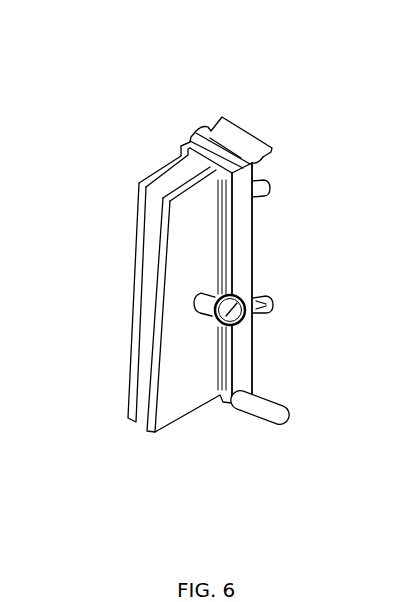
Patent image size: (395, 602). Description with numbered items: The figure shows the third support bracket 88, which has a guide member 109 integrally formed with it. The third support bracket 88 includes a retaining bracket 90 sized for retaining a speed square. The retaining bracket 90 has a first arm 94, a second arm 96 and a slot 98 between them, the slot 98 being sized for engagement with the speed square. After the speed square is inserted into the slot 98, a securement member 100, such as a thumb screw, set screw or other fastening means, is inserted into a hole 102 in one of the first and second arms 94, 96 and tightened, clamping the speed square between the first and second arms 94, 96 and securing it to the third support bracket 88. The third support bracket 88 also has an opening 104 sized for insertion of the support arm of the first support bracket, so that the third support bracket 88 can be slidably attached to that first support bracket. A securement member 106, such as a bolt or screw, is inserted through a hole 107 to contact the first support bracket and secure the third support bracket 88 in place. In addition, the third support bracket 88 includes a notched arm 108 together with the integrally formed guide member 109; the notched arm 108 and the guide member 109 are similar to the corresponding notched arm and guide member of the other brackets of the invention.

The third support bracket 88 is at (204, 100).
The retaining bracket 90 is at (190, 243).
The first arm 94 is at (176, 400).
The second arm 96 is at (135, 319).
The slot 98 is at (142, 377).
The securement member 100 is at (225, 311).
The hole 102 is at (208, 300).
The opening 104 is at (218, 143).
The securement member 106 is at (272, 310).
The hole 107 is at (264, 313).
The notched arm 108 is at (247, 132).
The guide member 109 is at (256, 411).